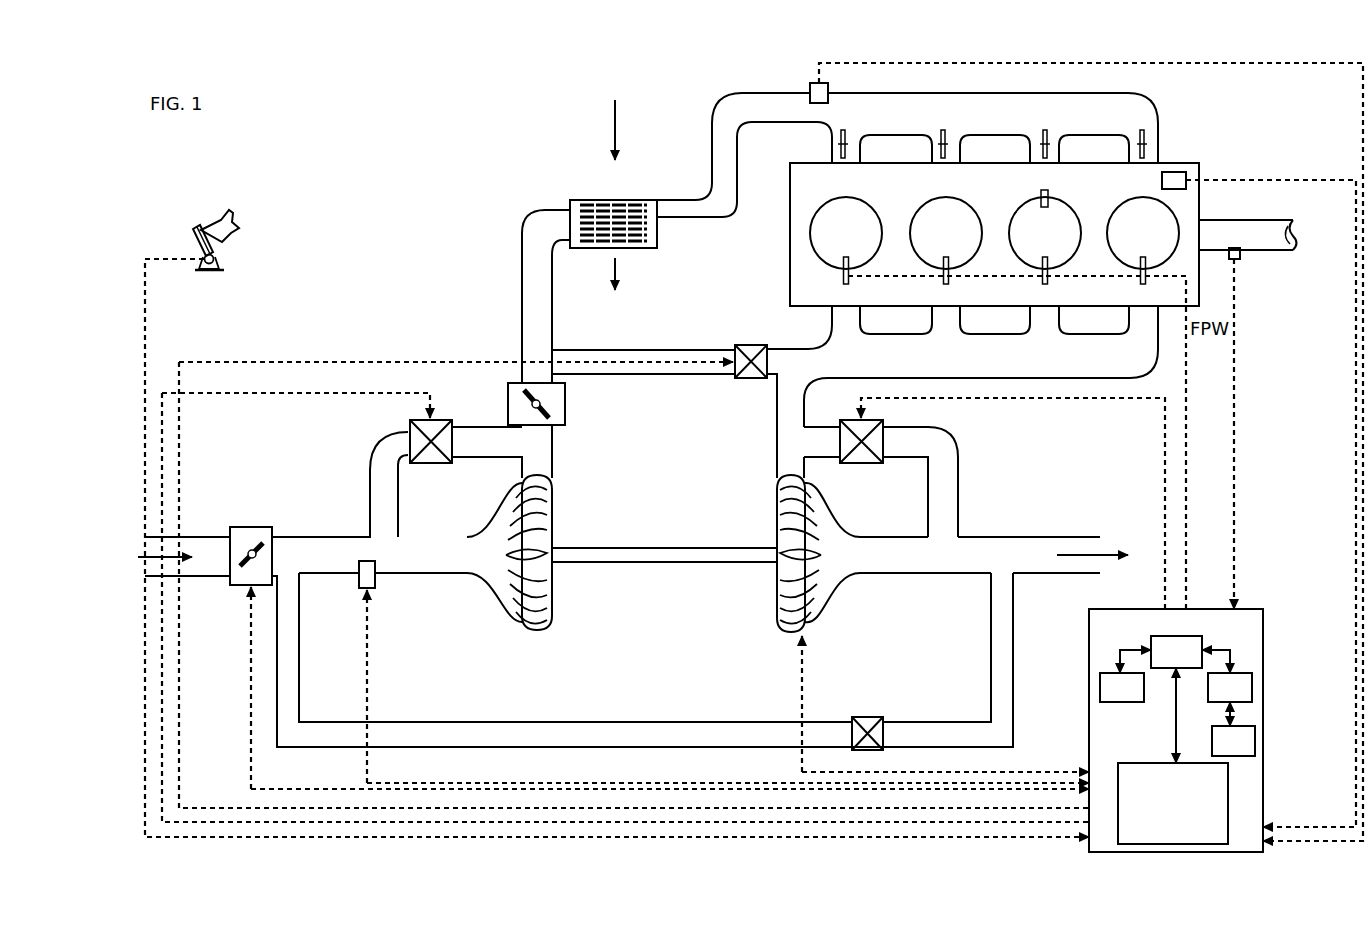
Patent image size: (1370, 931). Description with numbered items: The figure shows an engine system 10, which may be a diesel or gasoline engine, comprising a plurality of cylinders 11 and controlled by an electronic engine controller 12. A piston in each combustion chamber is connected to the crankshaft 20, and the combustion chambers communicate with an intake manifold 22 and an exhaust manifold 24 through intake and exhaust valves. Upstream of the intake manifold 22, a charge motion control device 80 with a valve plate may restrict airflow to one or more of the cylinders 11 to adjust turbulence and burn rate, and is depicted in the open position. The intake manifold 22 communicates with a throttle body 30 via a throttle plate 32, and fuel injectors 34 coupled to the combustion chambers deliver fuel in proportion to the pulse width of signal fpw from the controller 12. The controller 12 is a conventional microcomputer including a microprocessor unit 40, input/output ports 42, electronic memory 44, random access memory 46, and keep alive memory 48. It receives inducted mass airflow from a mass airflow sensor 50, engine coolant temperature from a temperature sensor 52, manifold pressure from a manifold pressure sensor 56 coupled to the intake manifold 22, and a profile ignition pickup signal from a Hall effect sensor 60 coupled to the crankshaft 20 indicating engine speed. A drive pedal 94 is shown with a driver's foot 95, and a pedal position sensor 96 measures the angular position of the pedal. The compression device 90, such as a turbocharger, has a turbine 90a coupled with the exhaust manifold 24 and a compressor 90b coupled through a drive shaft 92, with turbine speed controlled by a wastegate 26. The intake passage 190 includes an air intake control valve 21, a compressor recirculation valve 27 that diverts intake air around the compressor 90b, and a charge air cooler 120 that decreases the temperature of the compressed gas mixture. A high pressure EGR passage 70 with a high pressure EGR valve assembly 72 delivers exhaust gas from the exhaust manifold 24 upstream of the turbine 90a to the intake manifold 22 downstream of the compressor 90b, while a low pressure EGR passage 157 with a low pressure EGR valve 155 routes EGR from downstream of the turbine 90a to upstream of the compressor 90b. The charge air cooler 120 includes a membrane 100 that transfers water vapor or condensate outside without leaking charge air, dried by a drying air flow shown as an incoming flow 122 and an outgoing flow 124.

The engine system 10 is at (1094, 193).
The cylinders 11 is at (857, 243).
The electronic engine controller 12 is at (1162, 730).
The crankshaft 20 is at (1214, 220).
The air intake control valve 21 is at (246, 527).
The intake manifold 22 is at (881, 123).
The exhaust manifold 24 is at (1006, 366).
The wastegate 26 is at (886, 428).
The compressor recirculation valve 27 is at (410, 430).
The throttle body 30 is at (533, 383).
The throttle plate 32 is at (550, 418).
The fuel injectors 34 is at (843, 280).
The microprocessor unit 40 is at (1150, 640).
The input/output ports 42 is at (1206, 841).
The electronic memory 44 is at (1100, 695).
The random access memory 46 is at (1250, 676).
The keep alive memory 48 is at (1252, 728).
The mass airflow sensor 50 is at (377, 582).
The temperature sensor 52 is at (1180, 172).
The manifold pressure sensor 56 is at (828, 88).
The Hall effect sensor 60 is at (1229, 262).
The high pressure EGR passage 70 is at (638, 349).
The high pressure EGR valve assembly 72 is at (752, 345).
The charge motion control device 80 is at (845, 146).
The compression device 90 is at (778, 584).
The turbine 90a is at (815, 513).
The compressor 90b is at (512, 593).
The drive shaft 92 is at (598, 546).
The drive pedal 94 is at (612, 517).
The driver's foot 95 is at (236, 228).
The pedal position sensor 96 is at (220, 259).
The membrane 100 is at (593, 210).
The charge air cooler 120 is at (632, 202).
The incoming flow 122 is at (657, 143).
The outgoing flow 124 is at (667, 287).
The low pressure EGR valve 155 is at (868, 717).
The low pressure EGR passage 157 is at (590, 722).
The intake passage 190 is at (230, 566).